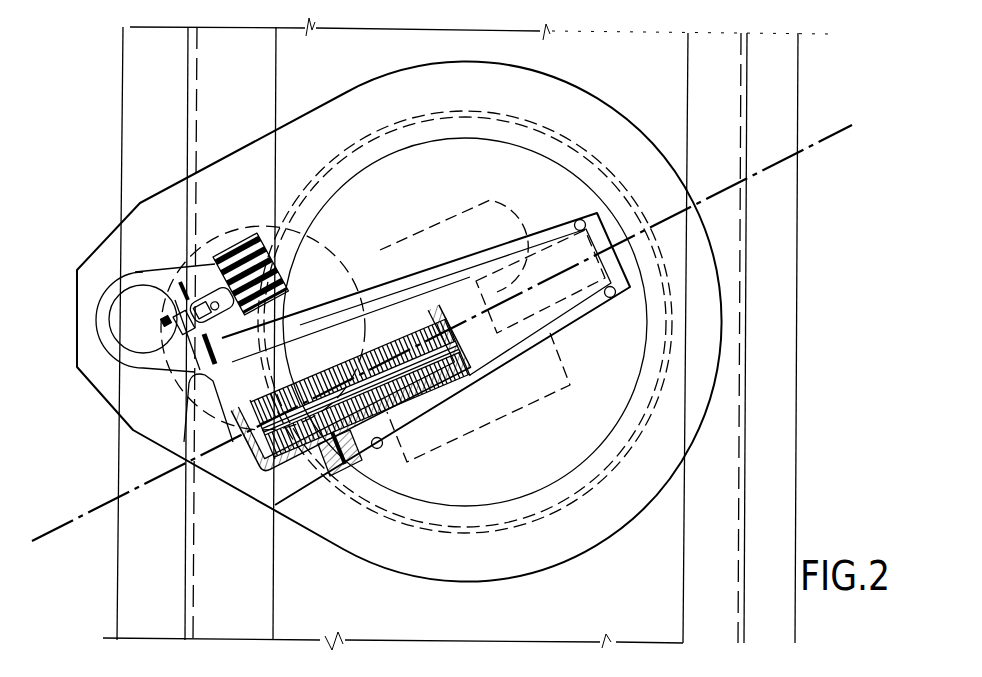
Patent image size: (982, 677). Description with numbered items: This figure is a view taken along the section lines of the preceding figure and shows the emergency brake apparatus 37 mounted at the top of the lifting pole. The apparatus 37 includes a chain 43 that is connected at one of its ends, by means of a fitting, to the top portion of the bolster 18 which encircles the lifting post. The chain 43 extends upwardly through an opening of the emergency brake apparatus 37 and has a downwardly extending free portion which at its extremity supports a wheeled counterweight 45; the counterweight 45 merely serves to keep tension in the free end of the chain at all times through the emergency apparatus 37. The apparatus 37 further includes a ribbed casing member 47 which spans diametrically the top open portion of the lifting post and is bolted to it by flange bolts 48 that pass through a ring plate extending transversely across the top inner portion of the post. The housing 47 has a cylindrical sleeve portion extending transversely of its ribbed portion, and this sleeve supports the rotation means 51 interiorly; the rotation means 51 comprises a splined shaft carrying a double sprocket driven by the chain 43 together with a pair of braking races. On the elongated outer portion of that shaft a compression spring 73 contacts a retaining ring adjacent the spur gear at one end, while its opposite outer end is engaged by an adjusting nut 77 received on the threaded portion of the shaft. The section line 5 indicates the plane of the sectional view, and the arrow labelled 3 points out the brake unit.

The motor unit 3 is at (170, 251).
The section line 5- 5 is at (60, 544).
The bolster 18 is at (100, 440).
The emergency brake apparatus 37 is at (422, 285).
The chain 43 is at (450, 380).
The wheeled counterweight 45 is at (514, 270).
The ribbed casing member 47 is at (560, 323).
The flange bolts 48 is at (580, 220).
The rotation means 51 is at (338, 478).
The compression spring 73 is at (207, 264).
The adjusting nut 77 is at (256, 240).